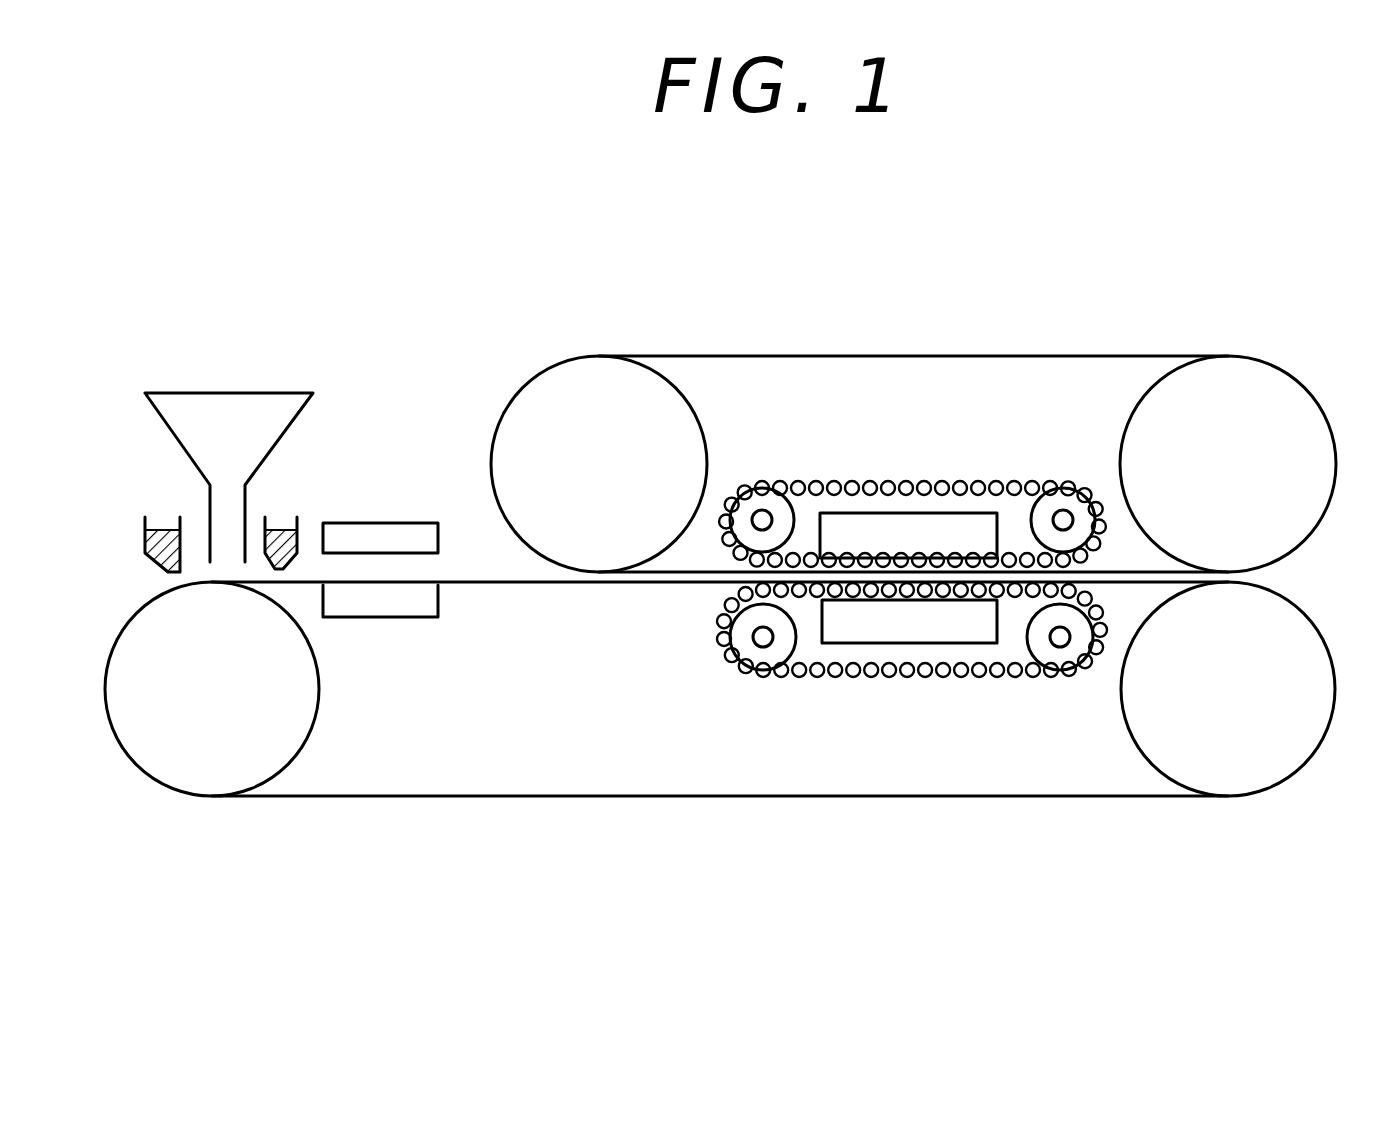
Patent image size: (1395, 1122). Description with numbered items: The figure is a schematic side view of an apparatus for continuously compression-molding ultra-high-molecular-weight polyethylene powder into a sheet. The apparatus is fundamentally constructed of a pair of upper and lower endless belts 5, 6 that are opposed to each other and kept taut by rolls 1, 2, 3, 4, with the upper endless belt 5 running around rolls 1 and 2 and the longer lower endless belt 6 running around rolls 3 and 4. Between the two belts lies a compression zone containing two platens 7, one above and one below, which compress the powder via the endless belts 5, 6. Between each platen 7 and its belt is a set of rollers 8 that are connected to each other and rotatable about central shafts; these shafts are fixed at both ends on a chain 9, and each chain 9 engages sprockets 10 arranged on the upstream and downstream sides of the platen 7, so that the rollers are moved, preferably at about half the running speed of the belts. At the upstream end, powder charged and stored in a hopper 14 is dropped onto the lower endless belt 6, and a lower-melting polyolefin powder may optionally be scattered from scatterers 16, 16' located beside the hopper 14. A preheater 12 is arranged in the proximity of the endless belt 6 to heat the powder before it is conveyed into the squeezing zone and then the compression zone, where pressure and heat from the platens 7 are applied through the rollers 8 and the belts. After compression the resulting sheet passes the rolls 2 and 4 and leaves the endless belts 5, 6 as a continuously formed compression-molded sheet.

The roll 1 is at (545, 366).
The roll 2 is at (1300, 380).
The roll 3 is at (170, 791).
The roll 4 is at (1334, 655).
The upper endless belt 5 is at (1005, 356).
The lower endless belt 6 is at (486, 590).
The platen 7 is at (947, 523).
The rollers 8 is at (845, 557).
The chain 9 is at (835, 673).
The sprocket 10 is at (763, 505).
The preheater 12 is at (387, 522).
The hopper 14 is at (233, 392).
The scatterer 16 is at (142, 507).
The scatterer 16' is at (308, 506).